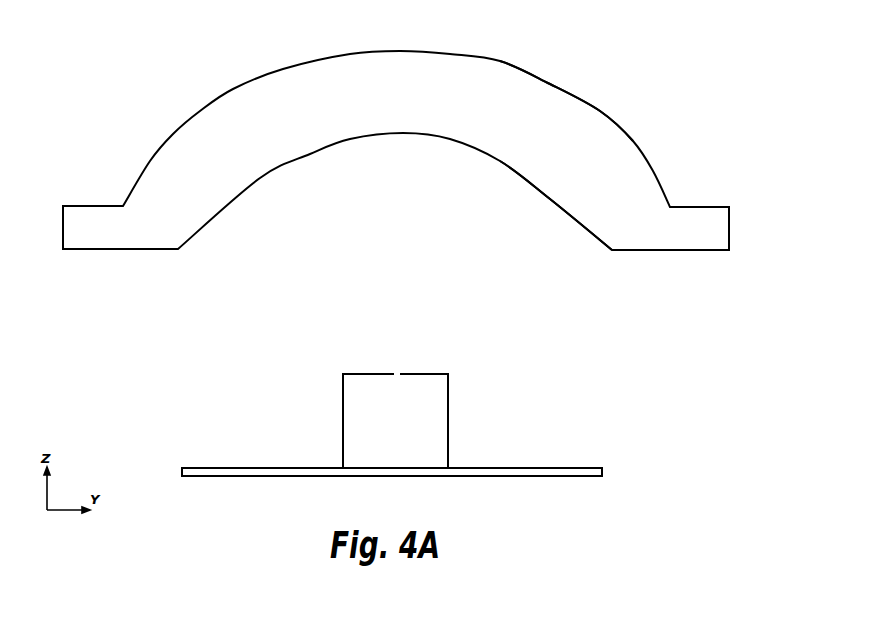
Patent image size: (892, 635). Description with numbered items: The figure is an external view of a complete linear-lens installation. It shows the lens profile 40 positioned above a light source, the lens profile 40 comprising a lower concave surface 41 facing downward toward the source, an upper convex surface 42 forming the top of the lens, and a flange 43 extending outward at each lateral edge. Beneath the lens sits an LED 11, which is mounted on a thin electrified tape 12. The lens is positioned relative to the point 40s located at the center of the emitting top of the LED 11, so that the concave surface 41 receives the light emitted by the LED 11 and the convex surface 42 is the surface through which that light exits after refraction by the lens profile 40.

The lens profile 40 is at (396, 150).
The lower concave surface 41 is at (543, 200).
The upper convex surface 42 is at (588, 98).
The flange 43 is at (733, 202).
The point at the center of the emitting top of the LED 40s is at (393, 372).
The LED 11 is at (395, 421).
The tape 12 is at (412, 475).